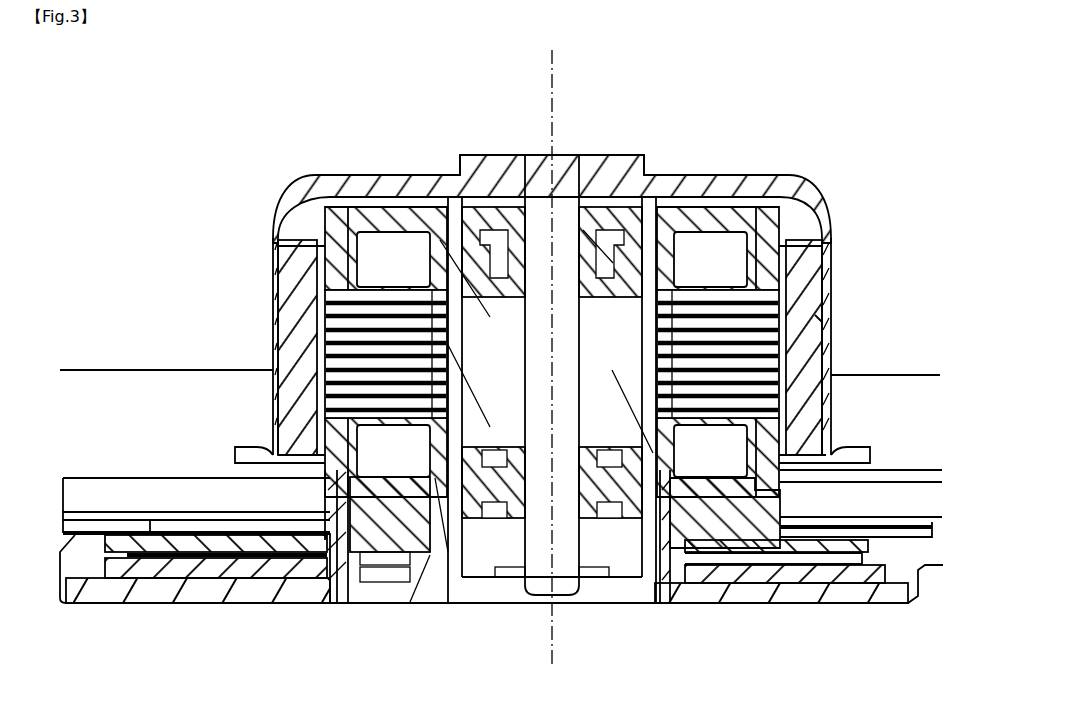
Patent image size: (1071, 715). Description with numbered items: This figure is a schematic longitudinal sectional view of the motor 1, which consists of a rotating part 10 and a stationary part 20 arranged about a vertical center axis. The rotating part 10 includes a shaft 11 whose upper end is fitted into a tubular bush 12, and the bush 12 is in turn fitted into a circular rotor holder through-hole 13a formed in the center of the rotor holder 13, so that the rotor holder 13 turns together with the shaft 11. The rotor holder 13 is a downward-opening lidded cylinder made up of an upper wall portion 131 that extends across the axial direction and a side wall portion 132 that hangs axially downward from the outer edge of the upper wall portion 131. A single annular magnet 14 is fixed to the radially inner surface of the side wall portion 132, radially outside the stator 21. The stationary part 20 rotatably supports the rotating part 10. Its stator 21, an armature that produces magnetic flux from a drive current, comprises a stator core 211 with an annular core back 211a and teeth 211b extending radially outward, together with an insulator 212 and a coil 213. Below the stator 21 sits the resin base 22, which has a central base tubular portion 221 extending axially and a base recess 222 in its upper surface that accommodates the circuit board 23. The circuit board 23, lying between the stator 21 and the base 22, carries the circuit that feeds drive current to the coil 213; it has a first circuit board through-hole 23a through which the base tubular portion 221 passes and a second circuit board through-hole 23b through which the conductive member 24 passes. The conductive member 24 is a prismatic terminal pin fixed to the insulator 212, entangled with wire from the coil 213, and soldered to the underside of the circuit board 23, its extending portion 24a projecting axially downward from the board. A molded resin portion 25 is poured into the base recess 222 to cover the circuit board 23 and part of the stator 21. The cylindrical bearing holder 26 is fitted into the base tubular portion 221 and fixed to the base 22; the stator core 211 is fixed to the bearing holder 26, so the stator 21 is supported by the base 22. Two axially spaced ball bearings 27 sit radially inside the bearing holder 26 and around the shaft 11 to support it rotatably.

The motor 1 is at (793, 128).
The rotating part 10 is at (293, 185).
The shaft 11 is at (560, 160).
The bush 12 is at (595, 200).
The rotor holder 13 is at (775, 180).
The rotor holder through-hole 13a is at (493, 155).
The upper wall portion 131 is at (362, 175).
The side wall portion 132 is at (833, 358).
The magnet 14 is at (822, 260).
The stationary part 20 is at (818, 617).
The stator 21 is at (787, 230).
The stator core 211 is at (163, 278).
The core back 211a is at (325, 313).
The teeth 211b is at (282, 342).
The insulator 212 is at (335, 258).
The coil 213 is at (370, 245).
The base 22 is at (130, 590).
The base tubular portion 221 is at (668, 547).
The base recess 222 is at (875, 563).
The circuit board 23 is at (232, 590).
The first circuit board through-hole 23a is at (430, 557).
The second circuit board through-hole 23b is at (308, 537).
The conductive member 24 is at (325, 510).
The extending portion 24a is at (305, 606).
The resin portion 25 is at (835, 449).
The bearing holder 26 is at (822, 322).
The bearing 27 is at (452, 197).